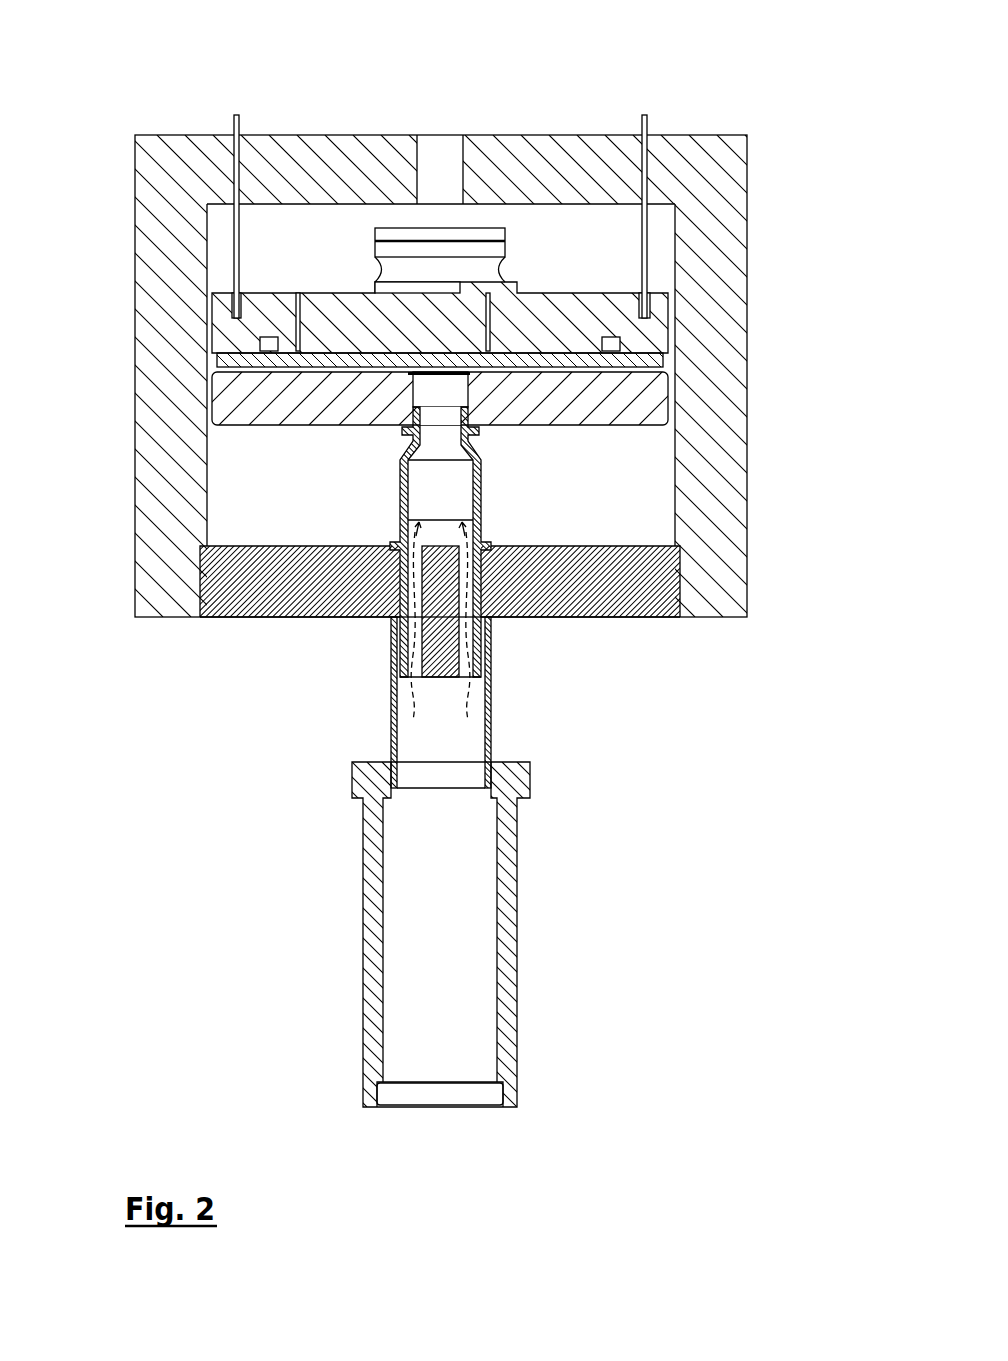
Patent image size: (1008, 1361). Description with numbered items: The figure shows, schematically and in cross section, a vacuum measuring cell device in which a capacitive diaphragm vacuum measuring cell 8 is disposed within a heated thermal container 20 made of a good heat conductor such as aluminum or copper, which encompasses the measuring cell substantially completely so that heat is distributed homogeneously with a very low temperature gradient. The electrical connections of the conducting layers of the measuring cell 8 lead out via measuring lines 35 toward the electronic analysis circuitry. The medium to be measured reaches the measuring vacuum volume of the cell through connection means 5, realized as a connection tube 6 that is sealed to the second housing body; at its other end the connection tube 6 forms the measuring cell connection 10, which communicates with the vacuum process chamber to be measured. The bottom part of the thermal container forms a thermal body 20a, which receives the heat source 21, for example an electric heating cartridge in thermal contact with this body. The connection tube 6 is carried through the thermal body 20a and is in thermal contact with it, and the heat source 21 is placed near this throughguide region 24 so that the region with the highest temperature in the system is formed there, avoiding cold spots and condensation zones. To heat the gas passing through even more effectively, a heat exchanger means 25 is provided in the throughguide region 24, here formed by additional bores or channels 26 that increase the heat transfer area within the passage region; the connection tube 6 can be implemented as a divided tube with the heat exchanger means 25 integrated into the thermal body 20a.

The connection means 5 is at (422, 437).
The connection tube 6 is at (399, 503).
The diaphragm vacuum measuring cell 8 is at (570, 243).
The measuring cell connection 10 is at (365, 915).
The thermal container 20 is at (752, 283).
The thermal body 20a is at (268, 577).
The heat source 21 is at (442, 578).
The throughguide region 24 is at (501, 626).
The heat exchanger means 25 is at (447, 628).
The bores or channels 26 is at (410, 622).
The measuring lines 35 is at (235, 110).